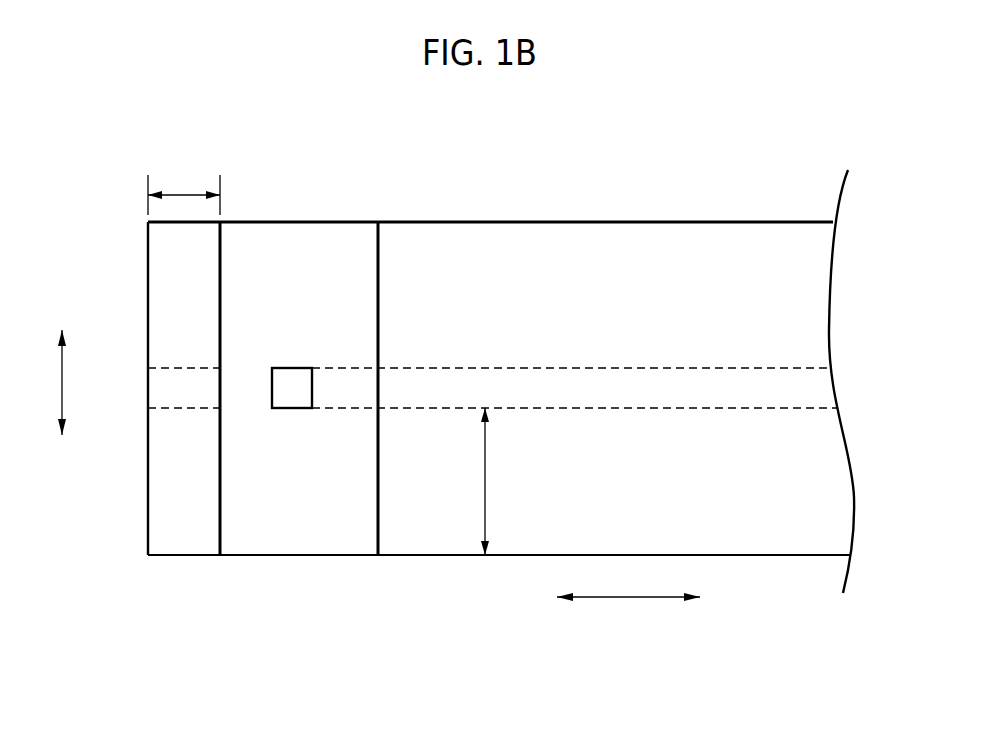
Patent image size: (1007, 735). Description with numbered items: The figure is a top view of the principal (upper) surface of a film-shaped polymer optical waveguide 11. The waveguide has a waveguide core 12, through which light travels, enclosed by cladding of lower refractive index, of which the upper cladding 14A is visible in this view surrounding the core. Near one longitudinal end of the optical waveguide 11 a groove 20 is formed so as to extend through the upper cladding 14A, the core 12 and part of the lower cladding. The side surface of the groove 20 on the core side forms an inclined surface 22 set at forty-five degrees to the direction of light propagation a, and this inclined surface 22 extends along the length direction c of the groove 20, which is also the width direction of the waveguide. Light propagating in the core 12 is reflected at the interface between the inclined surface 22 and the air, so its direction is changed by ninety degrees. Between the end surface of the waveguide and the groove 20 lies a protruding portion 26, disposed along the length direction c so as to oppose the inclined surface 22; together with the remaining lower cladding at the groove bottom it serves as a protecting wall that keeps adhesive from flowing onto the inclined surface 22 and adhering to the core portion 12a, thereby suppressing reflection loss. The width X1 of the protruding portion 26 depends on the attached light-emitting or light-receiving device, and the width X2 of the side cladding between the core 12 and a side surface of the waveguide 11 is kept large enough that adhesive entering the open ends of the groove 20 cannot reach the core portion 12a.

The polymer optical waveguide 11 is at (443, 207).
The waveguide core 12 is at (565, 382).
The core portion 12a is at (290, 393).
The upper cladding 14A is at (725, 248).
The groove 20 is at (274, 208).
The inclined surface 22 is at (325, 230).
The protruding portion 26 is at (188, 530).
The width of protruding portion X1 is at (184, 185).
The width of side cladding X2 is at (505, 481).
The direction of light propagation a is at (628, 613).
The length direction of groove c is at (52, 382).